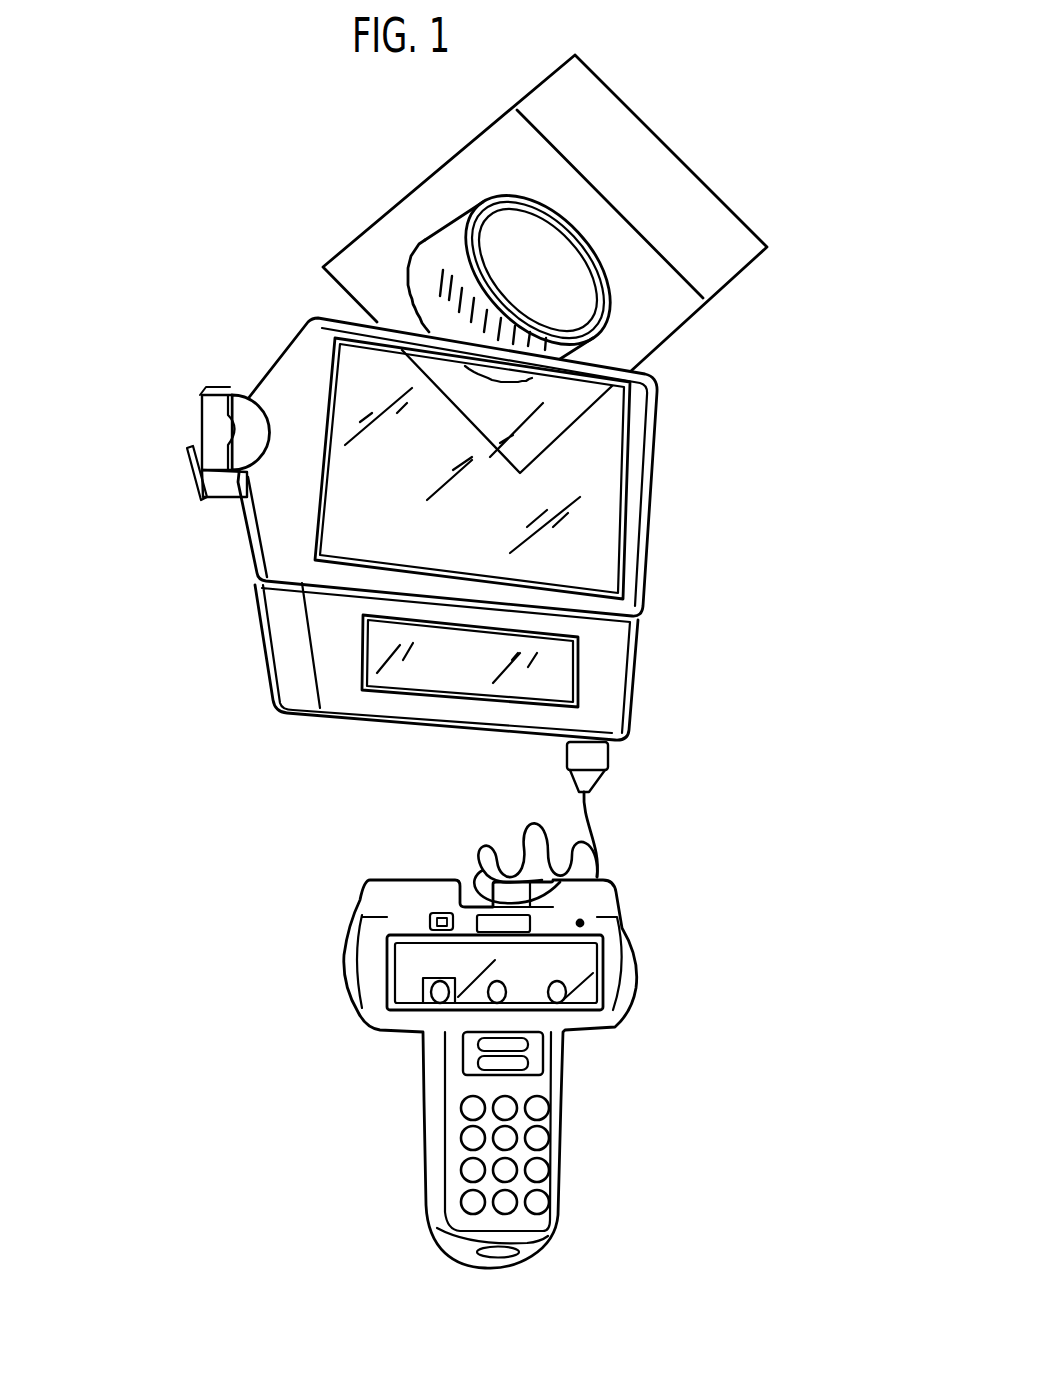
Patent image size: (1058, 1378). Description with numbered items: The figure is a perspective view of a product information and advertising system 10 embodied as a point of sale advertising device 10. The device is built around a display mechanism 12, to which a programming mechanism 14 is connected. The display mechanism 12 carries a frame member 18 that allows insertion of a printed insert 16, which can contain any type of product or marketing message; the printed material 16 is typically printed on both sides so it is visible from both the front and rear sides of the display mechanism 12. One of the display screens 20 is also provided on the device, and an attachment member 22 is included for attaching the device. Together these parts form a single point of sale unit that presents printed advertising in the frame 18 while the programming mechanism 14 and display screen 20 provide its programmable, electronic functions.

The product information and advertising system 10 is at (122, 227).
The display mechanism 12 is at (436, 610).
The programming mechanism 14 is at (805, 1088).
The printed insert 16 is at (748, 215).
The frame member 18 is at (643, 568).
The display screen 20 is at (374, 707).
The attachment member 22 is at (190, 500).